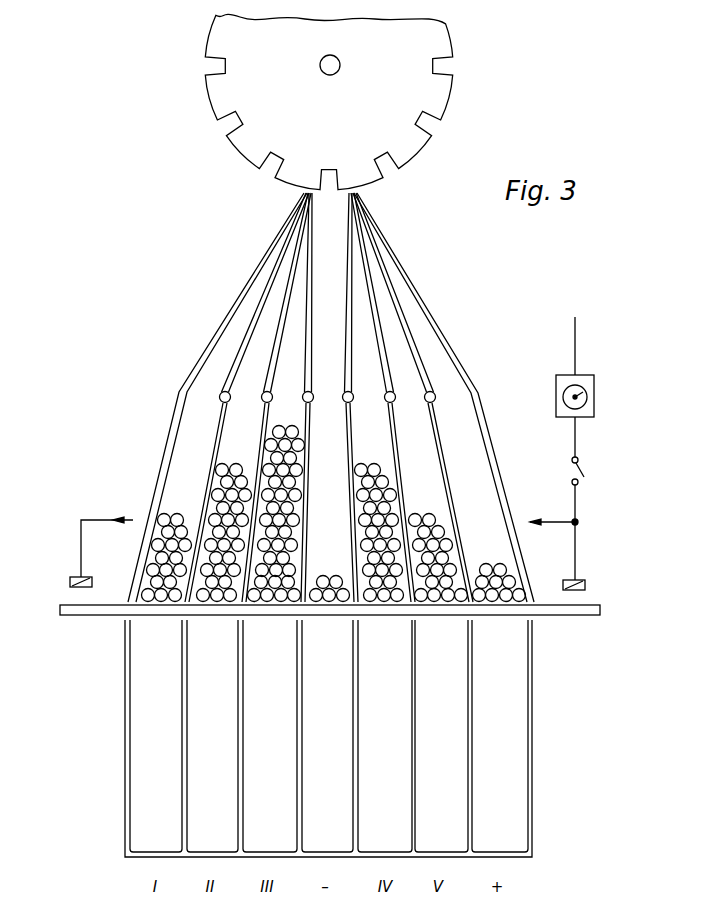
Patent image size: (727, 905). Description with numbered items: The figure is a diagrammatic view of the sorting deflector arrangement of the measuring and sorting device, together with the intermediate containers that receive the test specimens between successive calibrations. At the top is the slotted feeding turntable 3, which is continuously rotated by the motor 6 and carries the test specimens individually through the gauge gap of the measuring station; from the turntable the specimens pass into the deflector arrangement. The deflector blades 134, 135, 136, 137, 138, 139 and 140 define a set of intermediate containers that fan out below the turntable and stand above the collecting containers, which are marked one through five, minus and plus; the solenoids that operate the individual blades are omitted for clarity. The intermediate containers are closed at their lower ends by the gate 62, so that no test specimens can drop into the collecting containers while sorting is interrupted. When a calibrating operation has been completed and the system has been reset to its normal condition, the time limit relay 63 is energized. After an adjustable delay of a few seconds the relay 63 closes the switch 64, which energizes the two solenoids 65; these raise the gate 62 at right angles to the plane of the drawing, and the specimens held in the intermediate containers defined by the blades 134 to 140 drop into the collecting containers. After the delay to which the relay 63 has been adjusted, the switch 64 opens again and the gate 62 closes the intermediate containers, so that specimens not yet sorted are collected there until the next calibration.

The feeding turntable 3 is at (443, 43).
The deflector blade 134 is at (230, 377).
The deflector blade 135 is at (270, 363).
The deflector blade 136 is at (307, 363).
The deflector blade 137 is at (350, 350).
The deflector blade 138 is at (385, 355).
The deflector blade 139 is at (428, 382).
The deflector blade 140 is at (475, 397).
The motor 6 is at (578, 328).
The gate 62 is at (88, 612).
The time limit relay 63 is at (594, 392).
The switch 64 is at (581, 468).
The solenoids 65 is at (586, 583).